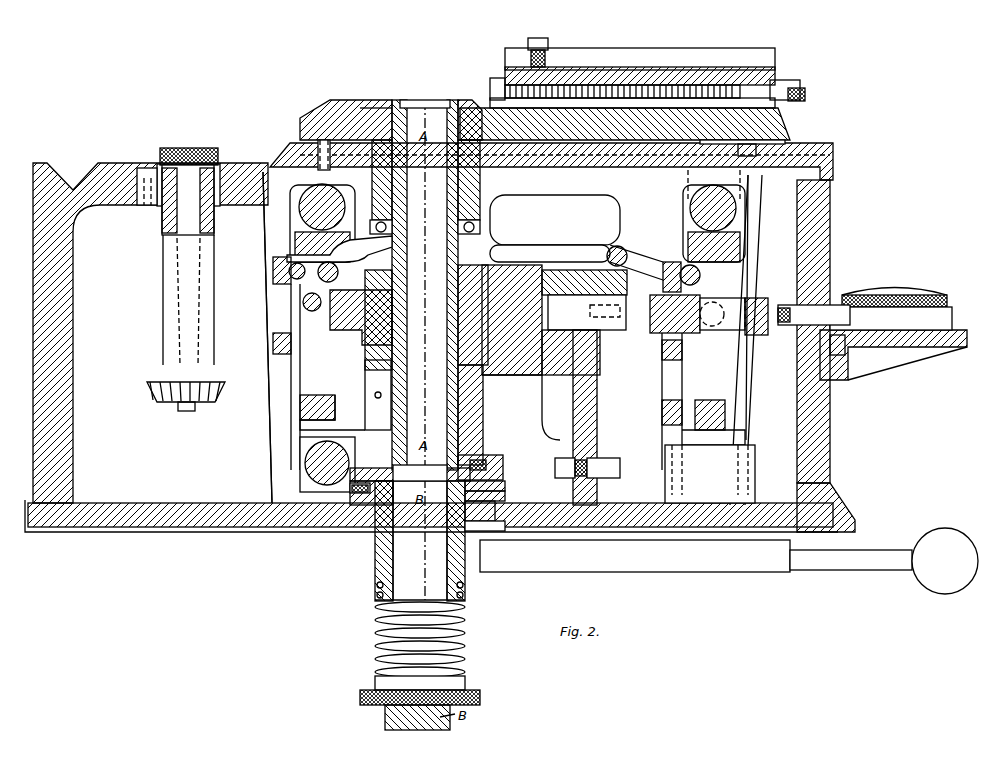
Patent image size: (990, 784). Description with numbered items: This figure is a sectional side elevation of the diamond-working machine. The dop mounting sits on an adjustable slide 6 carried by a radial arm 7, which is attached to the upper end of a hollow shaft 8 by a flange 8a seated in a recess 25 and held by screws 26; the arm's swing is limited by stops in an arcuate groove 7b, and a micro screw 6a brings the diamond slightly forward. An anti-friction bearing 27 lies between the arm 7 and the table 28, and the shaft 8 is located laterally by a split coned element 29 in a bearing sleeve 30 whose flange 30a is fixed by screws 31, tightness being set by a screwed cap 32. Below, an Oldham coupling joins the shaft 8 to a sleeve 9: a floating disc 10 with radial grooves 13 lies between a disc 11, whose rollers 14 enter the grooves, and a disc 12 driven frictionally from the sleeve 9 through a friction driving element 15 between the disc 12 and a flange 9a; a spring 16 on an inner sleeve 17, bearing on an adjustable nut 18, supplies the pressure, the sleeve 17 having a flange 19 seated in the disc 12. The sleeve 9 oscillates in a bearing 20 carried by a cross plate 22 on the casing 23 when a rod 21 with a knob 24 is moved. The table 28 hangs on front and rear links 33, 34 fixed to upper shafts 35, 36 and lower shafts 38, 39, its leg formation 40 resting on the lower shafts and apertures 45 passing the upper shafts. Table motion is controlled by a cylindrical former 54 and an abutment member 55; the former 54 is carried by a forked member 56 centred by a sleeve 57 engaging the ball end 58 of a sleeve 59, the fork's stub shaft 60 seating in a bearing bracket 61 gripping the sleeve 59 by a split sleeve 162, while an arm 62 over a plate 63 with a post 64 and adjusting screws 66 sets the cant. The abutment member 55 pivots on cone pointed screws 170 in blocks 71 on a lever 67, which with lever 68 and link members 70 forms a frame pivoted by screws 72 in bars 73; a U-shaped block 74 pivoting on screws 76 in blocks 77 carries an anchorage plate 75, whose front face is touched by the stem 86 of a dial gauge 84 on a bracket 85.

The adjustable slide 6 is at (700, 75).
The micro screw 6a is at (770, 92).
The radial arm 7 is at (745, 128).
The arcuate groove 7b is at (775, 143).
The hollow shaft 8 is at (450, 178).
The flange 8a is at (380, 108).
The sleeve 9 is at (447, 563).
The flange 9a is at (495, 499).
The floating disc 10 is at (400, 475).
The disc 11 is at (480, 465).
The disc 12 is at (495, 476).
The radial grooves 13 is at (505, 468).
The rollers 14 is at (362, 492).
The friction driving element 15 is at (500, 494).
The spring 16 is at (463, 598).
The sleeve 17 is at (447, 585).
The adjustable nut 18 is at (460, 690).
The flange 19 is at (447, 505).
The bearing 20 is at (447, 538).
The rod 21 is at (632, 560).
The cross plate or bar 22 is at (598, 525).
The box or casing 23 is at (815, 468).
The knob 24 is at (945, 561).
The recess 25 is at (360, 110).
The screws 26 is at (470, 108).
The anti-friction bearing 27 is at (530, 165).
The table or mounting 28 is at (803, 160).
The split coned element 29 is at (392, 190).
The bearing sleeve 30 is at (390, 210).
The flange 30a is at (490, 165).
The screws 31 is at (355, 140).
The screwed cap 32 is at (480, 215).
The front suspension link or frame 33 is at (705, 400).
The rear suspension link or frame 34 is at (316, 400).
The front upper shaft 35 is at (700, 213).
The rear upper shaft 36 is at (300, 220).
The front lower shaft 38 is at (725, 462).
The rear lower shaft 39 is at (306, 463).
The depending leg formation 40 is at (655, 460).
The apertures 45 is at (268, 241).
The cylindrical former 54 is at (350, 312).
The abutment member 55 is at (306, 304).
The forked member 56 is at (498, 368).
The sleeve 57 is at (447, 350).
The spherical or ball end 58 is at (447, 312).
The sleeve 59 is at (447, 396).
The stub shaft or spindle 60 is at (584, 300).
The bearing bracket 61 is at (552, 380).
The arm 62 is at (598, 392).
The plate 63 is at (560, 468).
The post 64 is at (600, 462).
The adjusting screws 66 is at (626, 432).
The upright frame element or lever 67 is at (278, 380).
The upright frame element or lever 68 is at (672, 385).
The link members 70 is at (548, 248).
The blocks 71 is at (280, 340).
The pivot screws 72 is at (288, 271).
The bars 73 is at (318, 272).
The U-shaped block 74 is at (665, 325).
The anchorage plate 75 is at (765, 332).
The screws 76 is at (712, 332).
The blocks 77 is at (745, 295).
The dial gauge 84 is at (895, 300).
The bracket 85 is at (905, 345).
The stem 86 is at (800, 305).
The split sleeve 162 is at (485, 400).
The cone pointed screws 170 is at (285, 322).